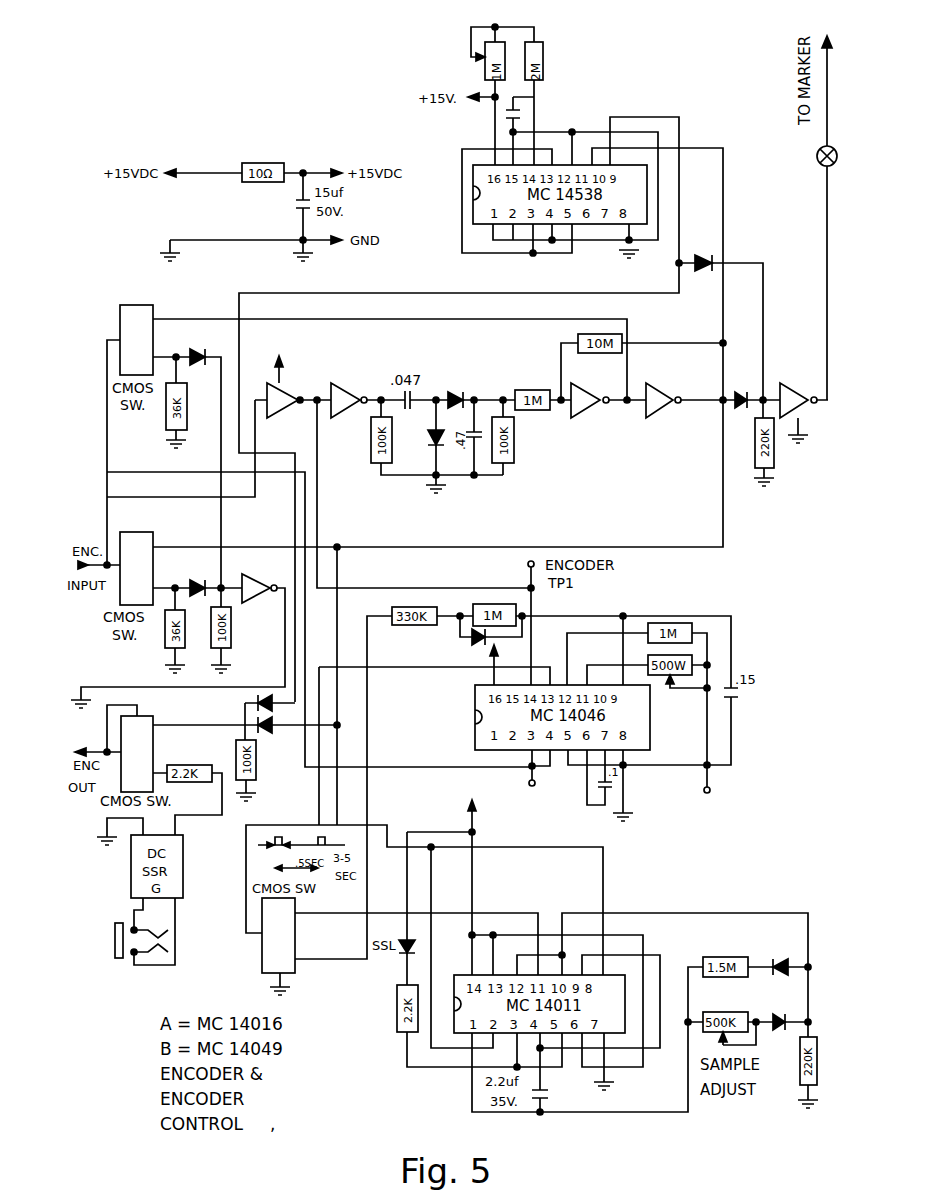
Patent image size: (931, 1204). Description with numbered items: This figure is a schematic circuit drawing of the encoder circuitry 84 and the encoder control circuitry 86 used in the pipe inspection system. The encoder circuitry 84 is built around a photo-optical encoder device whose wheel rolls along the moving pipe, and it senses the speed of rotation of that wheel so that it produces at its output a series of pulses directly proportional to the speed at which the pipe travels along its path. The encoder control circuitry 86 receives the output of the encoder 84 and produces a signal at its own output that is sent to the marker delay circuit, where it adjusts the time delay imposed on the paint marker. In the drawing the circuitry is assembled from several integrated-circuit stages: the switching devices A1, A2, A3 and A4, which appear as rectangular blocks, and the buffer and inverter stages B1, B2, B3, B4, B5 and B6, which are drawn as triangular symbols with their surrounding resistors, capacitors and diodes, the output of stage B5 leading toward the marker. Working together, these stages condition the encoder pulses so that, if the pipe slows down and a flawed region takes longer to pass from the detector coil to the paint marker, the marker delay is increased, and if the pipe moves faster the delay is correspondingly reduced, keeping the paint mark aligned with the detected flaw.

The encoder circuitry 84 is at (448, 909).
The encoder control circuitry 86 is at (451, 1054).
The CMOS switch A1 is at (136, 340).
The CMOS switch A2 is at (136, 568).
The CMOS switch A3 is at (137, 754).
The CMOS switch A4 is at (278, 935).
The buffer B1 is at (282, 400).
The inverter B2 is at (349, 400).
The inverter B3 is at (590, 400).
The inverter B4 is at (663, 400).
The inverter B5 is at (798, 400).
The inverter B6 is at (259, 588).